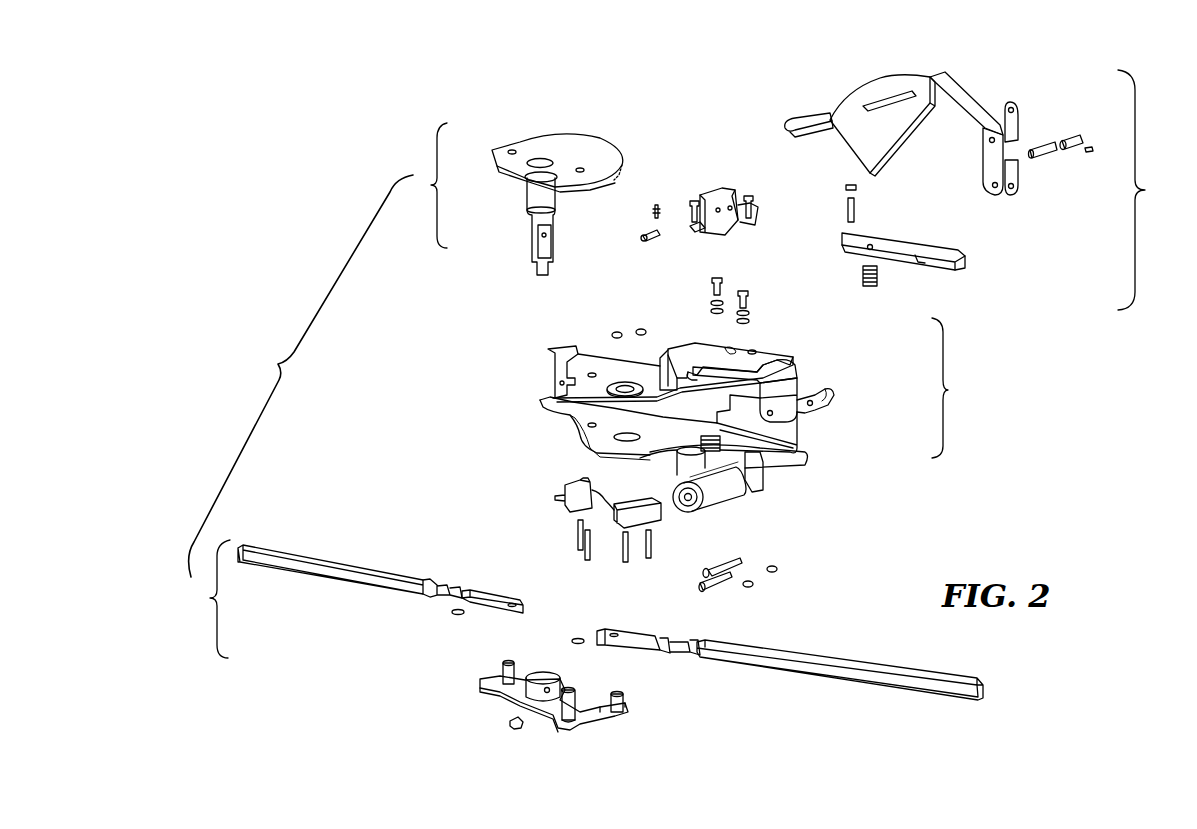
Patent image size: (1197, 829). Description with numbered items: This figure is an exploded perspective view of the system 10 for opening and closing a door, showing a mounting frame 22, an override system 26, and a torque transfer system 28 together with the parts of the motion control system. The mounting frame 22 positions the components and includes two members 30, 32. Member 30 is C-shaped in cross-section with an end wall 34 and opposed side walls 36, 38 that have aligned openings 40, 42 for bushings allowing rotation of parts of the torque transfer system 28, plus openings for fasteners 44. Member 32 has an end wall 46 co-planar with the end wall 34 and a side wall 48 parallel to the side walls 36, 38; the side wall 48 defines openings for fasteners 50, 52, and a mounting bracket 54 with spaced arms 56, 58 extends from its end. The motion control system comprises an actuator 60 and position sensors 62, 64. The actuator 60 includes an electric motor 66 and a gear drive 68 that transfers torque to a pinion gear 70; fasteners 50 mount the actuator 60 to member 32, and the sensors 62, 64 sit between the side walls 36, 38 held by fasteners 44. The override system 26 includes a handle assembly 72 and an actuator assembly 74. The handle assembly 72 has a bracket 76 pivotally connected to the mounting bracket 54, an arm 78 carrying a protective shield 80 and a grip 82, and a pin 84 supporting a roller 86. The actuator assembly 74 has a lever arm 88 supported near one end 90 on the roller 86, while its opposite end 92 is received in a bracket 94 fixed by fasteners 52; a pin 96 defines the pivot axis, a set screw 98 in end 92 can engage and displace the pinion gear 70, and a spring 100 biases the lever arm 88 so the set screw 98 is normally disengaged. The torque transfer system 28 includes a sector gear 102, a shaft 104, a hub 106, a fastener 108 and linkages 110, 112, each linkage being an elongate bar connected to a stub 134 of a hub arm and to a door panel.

The system 10 is at (306, 197).
The mounting frame 22 is at (952, 388).
The override system 26 is at (1143, 190).
The torque transfer system 28 is at (301, 376).
The frame member 30 is at (533, 385).
The frame member 32 is at (805, 345).
The end wall 34 is at (558, 378).
The side wall 36 is at (560, 365).
The side wall 38 is at (548, 405).
The opening 40 is at (617, 380).
The opening 42 is at (620, 438).
The fasteners 44 is at (625, 562).
The end wall 46 is at (798, 370).
The side wall 48 is at (750, 352).
The fasteners 50 is at (741, 290).
The fasteners 52 is at (748, 195).
The mounting bracket 54 is at (832, 412).
The arm 56 is at (830, 398).
The arm 58 is at (797, 415).
The actuator 60 is at (790, 488).
The position sensor 62 is at (560, 502).
The position sensor 64 is at (650, 510).
The electric motor 66 is at (730, 490).
The gear drive 68 is at (775, 450).
The pinion gear 70 is at (660, 452).
The handle assembly 72 is at (838, 67).
The actuator assembly 74 is at (970, 288).
The bracket 76 is at (990, 156).
The arm 78 is at (975, 120).
The protective shield 80 is at (862, 135).
The grip 82 is at (795, 118).
The pin 84 is at (1048, 153).
The roller 86 is at (1077, 140).
The lever arm 88 is at (915, 245).
The end 90 is at (982, 263).
The end 92 is at (835, 237).
The bracket 94 is at (700, 226).
The pin 96 is at (650, 229).
The set screw 98 is at (857, 208).
The spring 100 is at (883, 273).
The sector gear 102 is at (550, 152).
The shaft 104 is at (530, 197).
The hub 106 is at (505, 700).
The fastener 108 is at (508, 728).
The linkage 110 is at (337, 575).
The linkage 112 is at (810, 665).
The stub 134 is at (503, 670).